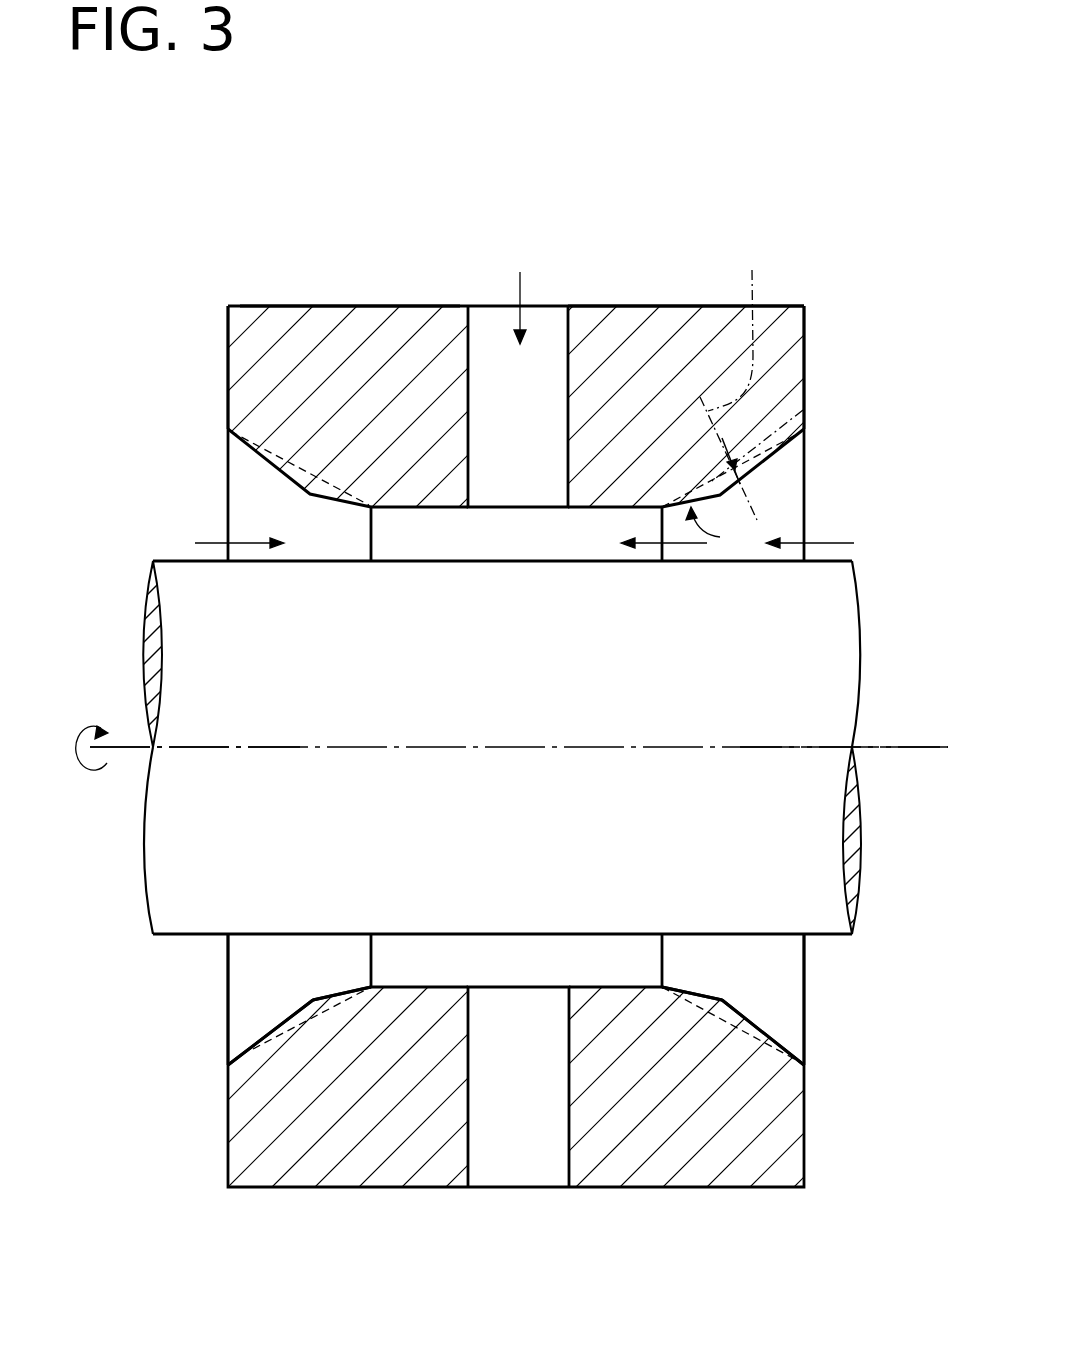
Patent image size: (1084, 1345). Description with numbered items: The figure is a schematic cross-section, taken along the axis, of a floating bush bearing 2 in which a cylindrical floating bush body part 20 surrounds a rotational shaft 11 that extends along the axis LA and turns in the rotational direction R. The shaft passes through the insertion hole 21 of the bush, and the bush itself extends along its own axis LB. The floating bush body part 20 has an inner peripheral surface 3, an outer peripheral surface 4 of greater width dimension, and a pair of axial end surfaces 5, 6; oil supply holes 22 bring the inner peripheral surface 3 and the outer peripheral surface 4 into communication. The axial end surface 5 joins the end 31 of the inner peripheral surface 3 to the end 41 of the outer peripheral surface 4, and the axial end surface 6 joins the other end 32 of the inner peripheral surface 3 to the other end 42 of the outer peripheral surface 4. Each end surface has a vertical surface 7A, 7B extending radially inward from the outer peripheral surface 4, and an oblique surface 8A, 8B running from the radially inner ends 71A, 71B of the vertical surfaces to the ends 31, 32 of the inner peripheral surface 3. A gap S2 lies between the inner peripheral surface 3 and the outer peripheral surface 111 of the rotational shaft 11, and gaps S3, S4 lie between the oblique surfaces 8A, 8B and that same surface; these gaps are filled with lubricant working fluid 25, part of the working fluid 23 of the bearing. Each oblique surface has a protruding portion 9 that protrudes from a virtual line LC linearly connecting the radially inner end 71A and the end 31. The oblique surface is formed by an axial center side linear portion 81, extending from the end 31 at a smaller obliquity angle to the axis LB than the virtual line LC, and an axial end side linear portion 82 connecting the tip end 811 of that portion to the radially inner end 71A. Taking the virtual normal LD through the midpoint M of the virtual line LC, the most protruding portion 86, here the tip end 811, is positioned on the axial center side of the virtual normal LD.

The floating bush bearing 2 is at (185, 117).
The inner peripheral surface 3 is at (623, 506).
The outer peripheral surface 4 is at (432, 305).
The axial end surface 5 is at (804, 330).
The axial end surface 6 is at (228, 333).
The vertical surface 7A is at (804, 363).
The vertical surface 7B is at (228, 378).
The radially inner end of vertical surface 71A is at (804, 430).
The radially inner end of vertical surface 71B is at (228, 429).
The tip end of axial center side linear portion 811 is at (805, 483).
The most protruding portion 86 is at (722, 496).
The floating bush body part 20 is at (297, 300).
The insertion hole 21 is at (397, 1188).
The oil supply hole 22 is at (568, 337).
The working fluid 23 is at (607, 1280).
The working fluid 25 is at (542, 1134).
The end of inner peripheral surface 31 is at (662, 506).
The other end of inner peripheral surface 32 is at (373, 505).
The end of outer peripheral surface 41 is at (804, 306).
The left end face 42 is at (228, 306).
The rotational shaft 11 is at (193, 934).
The outer peripheral surface of rotational shaft 111 is at (170, 560).
The oblique surface 8A is at (895, 990).
The oblique surface 8B is at (138, 1018).
The axial center side linear portion 81 is at (300, 990).
The axial end side linear portion 82 is at (290, 1047).
The protruding portion 9 is at (290, 1033).
The gap S2 is at (492, 1188).
The gap S3 is at (790, 960).
The gap S4 is at (262, 963).
The axis LA is at (125, 746).
The axis LB is at (900, 746).
The virtual line LC is at (803, 410).
The virtual normal LD is at (740, 325).
The midpoint M is at (740, 476).
The rotational direction R is at (96, 728).